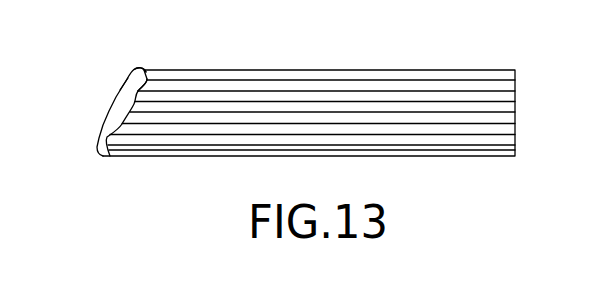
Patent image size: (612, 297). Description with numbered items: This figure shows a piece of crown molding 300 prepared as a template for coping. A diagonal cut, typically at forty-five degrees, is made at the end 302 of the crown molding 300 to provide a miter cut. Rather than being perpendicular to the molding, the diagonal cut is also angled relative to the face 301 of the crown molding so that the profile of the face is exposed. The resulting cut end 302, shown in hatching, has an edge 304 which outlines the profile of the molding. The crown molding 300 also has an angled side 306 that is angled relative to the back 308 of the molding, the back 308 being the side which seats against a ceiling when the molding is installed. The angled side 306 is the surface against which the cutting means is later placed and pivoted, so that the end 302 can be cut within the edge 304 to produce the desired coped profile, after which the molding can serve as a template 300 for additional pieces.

The crown molding 300 is at (278, 101).
The face 301 is at (262, 141).
The cut end 302 is at (103, 119).
The edge 304 is at (140, 90).
The angled side 306 is at (140, 69).
The back 308 is at (112, 62).